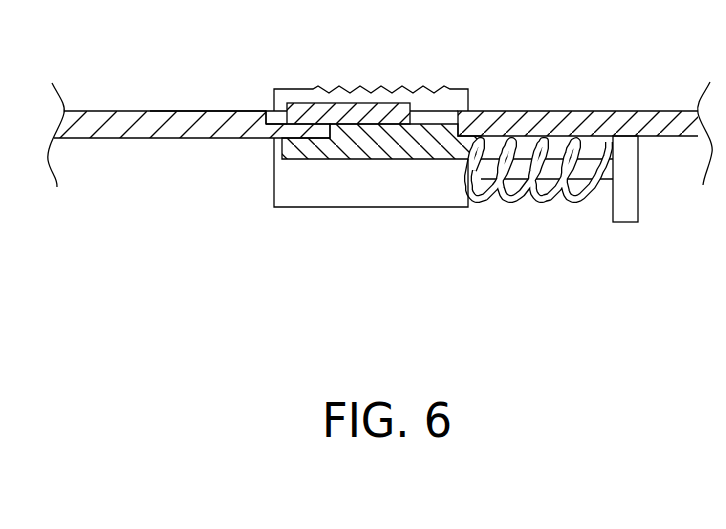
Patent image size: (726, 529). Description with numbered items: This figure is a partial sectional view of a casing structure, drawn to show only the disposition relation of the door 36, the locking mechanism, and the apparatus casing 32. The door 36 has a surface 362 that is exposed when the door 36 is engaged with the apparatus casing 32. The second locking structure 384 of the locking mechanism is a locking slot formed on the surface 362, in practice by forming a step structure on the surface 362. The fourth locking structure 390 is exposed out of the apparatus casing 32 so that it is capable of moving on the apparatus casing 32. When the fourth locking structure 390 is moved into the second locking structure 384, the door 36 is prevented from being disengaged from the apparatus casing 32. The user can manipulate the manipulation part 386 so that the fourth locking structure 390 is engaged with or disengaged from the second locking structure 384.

The apparatus casing 32 is at (647, 118).
The door 36 is at (130, 120).
The surface 362 is at (217, 110).
The second locking structure 384 is at (268, 126).
The manipulation part 386 is at (453, 97).
The fourth locking structure 390 is at (352, 105).